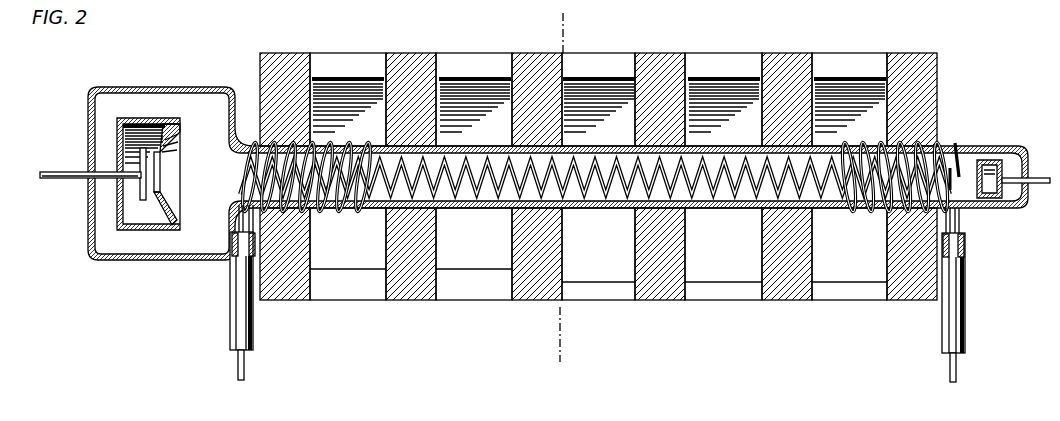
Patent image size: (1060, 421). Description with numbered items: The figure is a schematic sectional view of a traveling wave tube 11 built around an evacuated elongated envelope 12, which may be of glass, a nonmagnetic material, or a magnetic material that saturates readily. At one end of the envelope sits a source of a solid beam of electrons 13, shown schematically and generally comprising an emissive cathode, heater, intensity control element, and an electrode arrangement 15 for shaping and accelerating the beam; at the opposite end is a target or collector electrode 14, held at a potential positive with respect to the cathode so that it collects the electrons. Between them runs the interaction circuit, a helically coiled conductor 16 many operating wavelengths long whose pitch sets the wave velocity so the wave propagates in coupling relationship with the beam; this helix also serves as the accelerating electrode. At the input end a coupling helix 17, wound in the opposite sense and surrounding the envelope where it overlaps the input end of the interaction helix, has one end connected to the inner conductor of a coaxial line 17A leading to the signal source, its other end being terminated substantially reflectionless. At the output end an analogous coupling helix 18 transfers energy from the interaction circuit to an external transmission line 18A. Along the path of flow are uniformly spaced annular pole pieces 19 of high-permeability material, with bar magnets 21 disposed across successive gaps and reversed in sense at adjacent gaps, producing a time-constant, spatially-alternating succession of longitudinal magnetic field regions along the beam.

The traveling wave tube 11 is at (700, 27).
The evacuated elongated envelope 12 is at (1008, 147).
The source of a solid beam of electrons 13 is at (148, 118).
The target or collector electrode 14 is at (992, 200).
The electrode arrangement 15 is at (147, 232).
The helically coiled conductor 16 is at (472, 207).
The helix 17 is at (344, 207).
The coaxial line 17A is at (230, 326).
The output coupling helix 18 is at (963, 150).
The external transmission line 18A is at (965, 331).
The annular pole pieces 19 is at (780, 300).
The bar magnets 21 is at (455, 53).